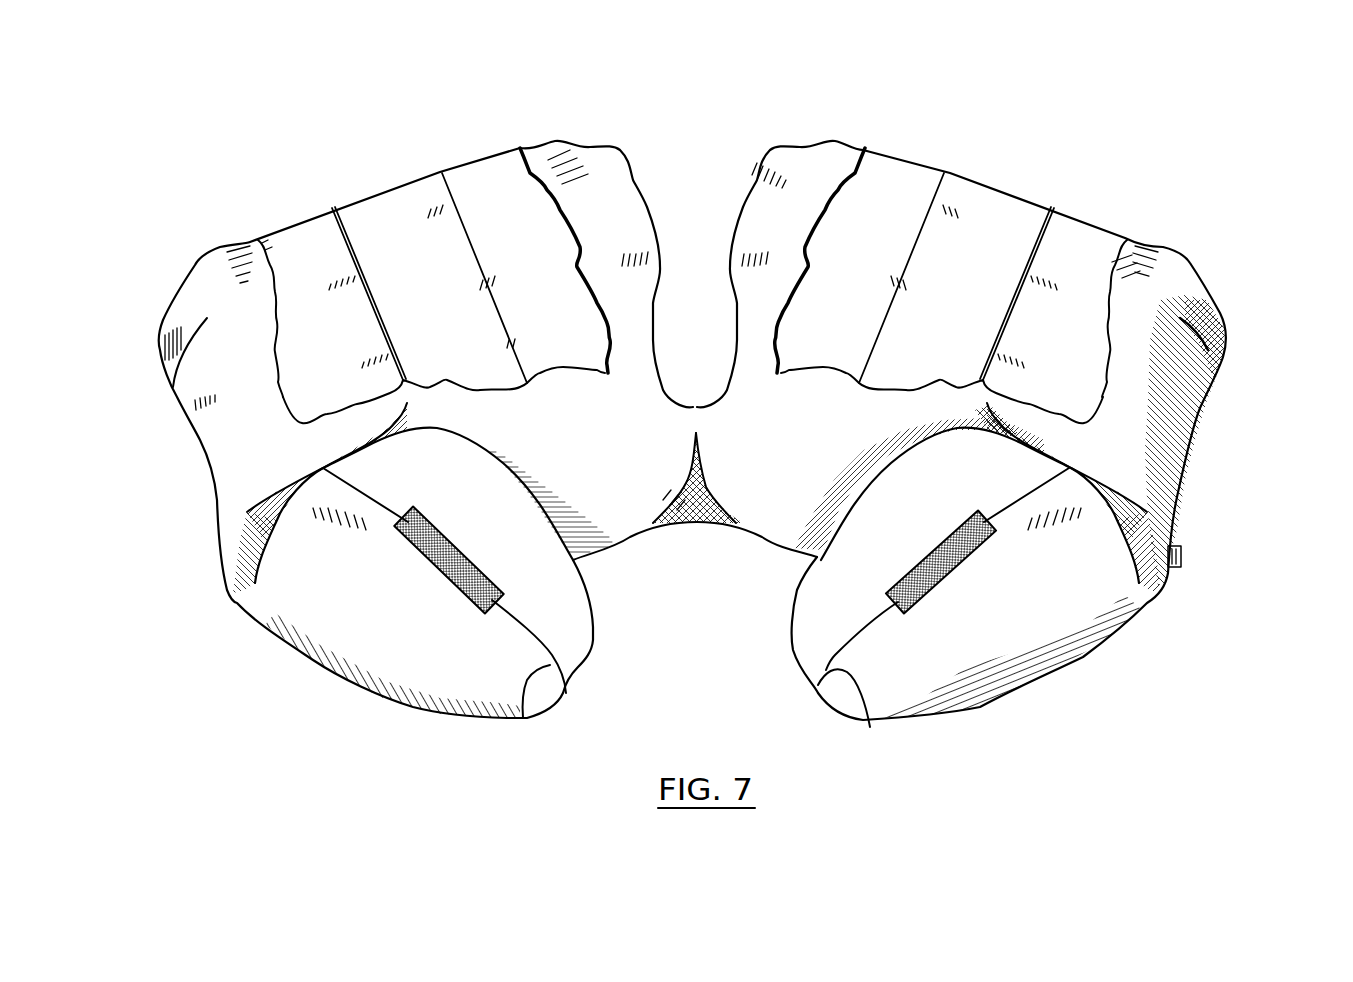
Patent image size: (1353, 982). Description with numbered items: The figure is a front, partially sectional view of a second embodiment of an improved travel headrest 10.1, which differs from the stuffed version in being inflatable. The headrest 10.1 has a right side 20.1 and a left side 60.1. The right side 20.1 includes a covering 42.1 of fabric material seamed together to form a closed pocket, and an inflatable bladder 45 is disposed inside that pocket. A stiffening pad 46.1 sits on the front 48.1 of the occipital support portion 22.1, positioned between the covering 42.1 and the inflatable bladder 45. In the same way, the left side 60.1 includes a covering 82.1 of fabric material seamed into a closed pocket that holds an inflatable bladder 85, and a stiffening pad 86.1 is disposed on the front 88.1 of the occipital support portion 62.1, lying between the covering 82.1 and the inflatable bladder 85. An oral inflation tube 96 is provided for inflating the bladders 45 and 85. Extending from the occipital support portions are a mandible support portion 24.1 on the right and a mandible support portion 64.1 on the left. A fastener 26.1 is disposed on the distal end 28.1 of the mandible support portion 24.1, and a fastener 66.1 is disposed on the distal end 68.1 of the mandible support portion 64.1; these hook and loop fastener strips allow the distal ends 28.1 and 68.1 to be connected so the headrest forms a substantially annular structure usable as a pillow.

The improved travel headrest 10.1 is at (170, 175).
The right side 20.1 is at (163, 320).
The occipital support portion 22.1 is at (225, 442).
The mandible support portion 24.1 is at (337, 628).
The fastener 26.1 is at (470, 600).
The distal end 28.1 is at (523, 718).
The covering 42.1 is at (565, 185).
The inflatable bladder 45 is at (300, 253).
The stiffening pad 46.1 is at (388, 210).
The front 48.1 is at (636, 476).
The left side 60.1 is at (1190, 425).
The occipital support portion 62.1 is at (1140, 290).
The mandible support portion 64.1 is at (1070, 600).
The fastener 66.1 is at (940, 570).
The distal end 68.1 is at (870, 727).
The covering 82.1 is at (827, 170).
The inflatable bladder 85 is at (1065, 228).
The stiffening pad 86.1 is at (968, 205).
The front 88.1 is at (791, 476).
The oral inflation tube 96 is at (1172, 543).